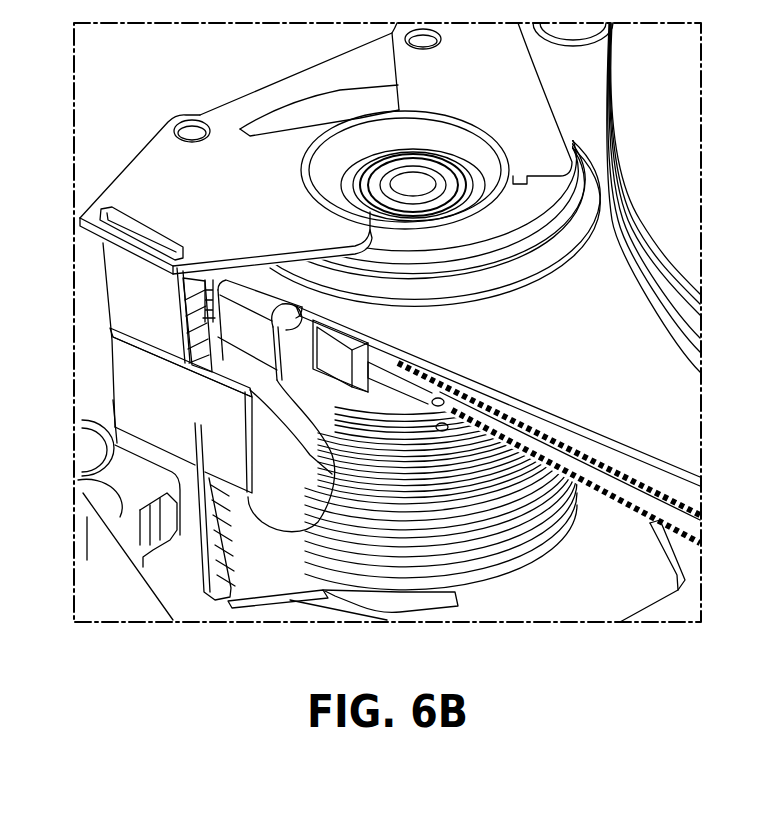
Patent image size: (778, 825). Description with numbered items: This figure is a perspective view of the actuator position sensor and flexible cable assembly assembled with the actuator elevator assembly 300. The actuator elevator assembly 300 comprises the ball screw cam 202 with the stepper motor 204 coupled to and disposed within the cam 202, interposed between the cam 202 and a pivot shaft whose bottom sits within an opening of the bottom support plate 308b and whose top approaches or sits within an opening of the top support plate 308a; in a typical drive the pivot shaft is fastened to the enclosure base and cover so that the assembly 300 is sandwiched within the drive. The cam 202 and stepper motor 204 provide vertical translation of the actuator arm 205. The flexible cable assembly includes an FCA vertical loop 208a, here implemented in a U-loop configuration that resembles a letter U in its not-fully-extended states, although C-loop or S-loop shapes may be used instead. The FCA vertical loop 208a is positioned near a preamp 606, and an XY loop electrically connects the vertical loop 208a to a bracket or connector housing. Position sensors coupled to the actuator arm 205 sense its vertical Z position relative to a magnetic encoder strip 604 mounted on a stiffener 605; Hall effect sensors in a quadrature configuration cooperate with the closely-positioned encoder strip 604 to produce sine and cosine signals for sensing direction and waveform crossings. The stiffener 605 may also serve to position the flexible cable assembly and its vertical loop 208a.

The actuator elevator assembly 300 is at (276, 80).
The top support plate 308a is at (173, 158).
The bottom support plate 308b is at (250, 582).
The stepper motor 204 is at (463, 168).
The actuator arm 205 is at (603, 327).
The ball screw cam 202 is at (508, 546).
The preamp 606 is at (350, 334).
The stiffener 605 is at (160, 309).
The FCA vertical loop 208a is at (278, 507).
The magnetic encoder strip 604 is at (210, 593).